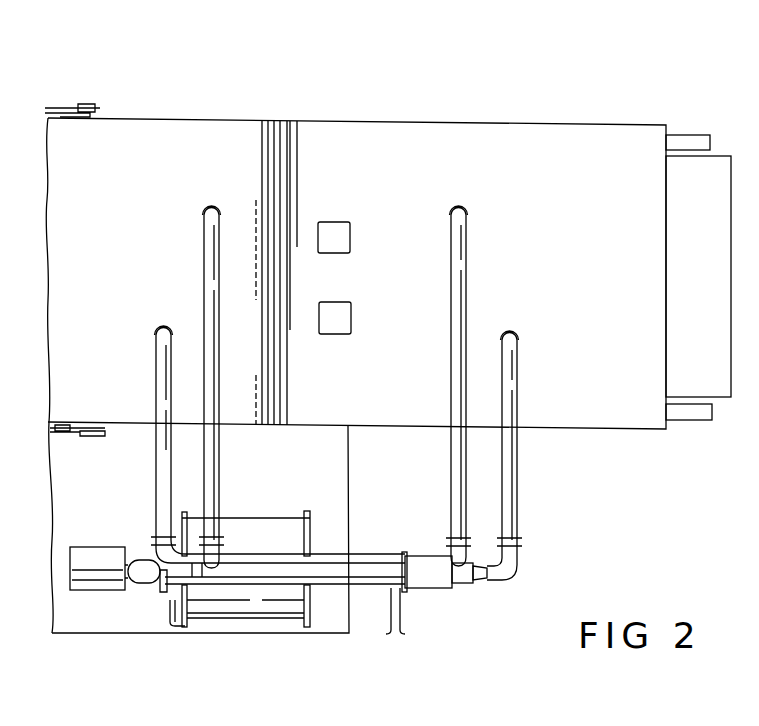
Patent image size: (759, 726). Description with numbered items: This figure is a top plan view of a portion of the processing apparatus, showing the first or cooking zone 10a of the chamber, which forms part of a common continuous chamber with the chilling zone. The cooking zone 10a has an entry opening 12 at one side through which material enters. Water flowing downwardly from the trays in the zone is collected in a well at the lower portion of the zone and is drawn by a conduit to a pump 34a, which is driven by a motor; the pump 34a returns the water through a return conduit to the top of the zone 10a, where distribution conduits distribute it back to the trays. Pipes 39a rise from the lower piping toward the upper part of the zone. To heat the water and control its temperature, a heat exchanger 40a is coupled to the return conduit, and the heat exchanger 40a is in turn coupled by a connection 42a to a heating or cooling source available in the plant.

The first zone 10a is at (420, 107).
The entry opening 12 is at (668, 221).
The coolant pipes 39a is at (208, 277).
The heat exchanger 40a is at (367, 568).
The pump 34a is at (263, 605).
The coupling conduit 42a is at (172, 612).